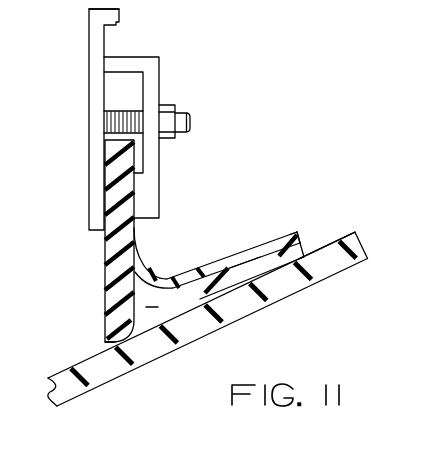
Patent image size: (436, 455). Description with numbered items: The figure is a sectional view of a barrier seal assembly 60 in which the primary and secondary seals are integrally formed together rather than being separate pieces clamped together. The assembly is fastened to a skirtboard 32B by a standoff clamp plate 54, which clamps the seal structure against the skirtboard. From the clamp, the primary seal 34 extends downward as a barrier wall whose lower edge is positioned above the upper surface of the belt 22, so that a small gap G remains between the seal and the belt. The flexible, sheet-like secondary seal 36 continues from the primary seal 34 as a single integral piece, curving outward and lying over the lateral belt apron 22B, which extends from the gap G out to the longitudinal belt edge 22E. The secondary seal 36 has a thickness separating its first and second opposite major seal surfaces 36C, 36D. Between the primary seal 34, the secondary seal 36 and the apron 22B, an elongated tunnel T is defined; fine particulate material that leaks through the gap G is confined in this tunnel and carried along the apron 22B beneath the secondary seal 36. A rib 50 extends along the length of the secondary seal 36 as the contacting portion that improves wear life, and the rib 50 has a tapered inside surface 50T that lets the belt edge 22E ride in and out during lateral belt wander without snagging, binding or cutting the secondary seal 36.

The belt 22 is at (52, 395).
The lateral belt apron 22B is at (342, 238).
The longitudinal belt edge 22E is at (381, 236).
The skirtboard 32B is at (90, 46).
The primary seal 34 is at (105, 273).
The secondary seal 36 is at (190, 272).
The first major seal surface 36C is at (278, 247).
The second major seal surface 36D is at (240, 271).
The rib 50 is at (303, 252).
The tapered inside surface 50T is at (317, 314).
The standoff clamp plate 54 is at (181, 52).
The barrier seal assembly 60 is at (197, 183).
The gap G is at (108, 344).
The tunnel T is at (152, 299).